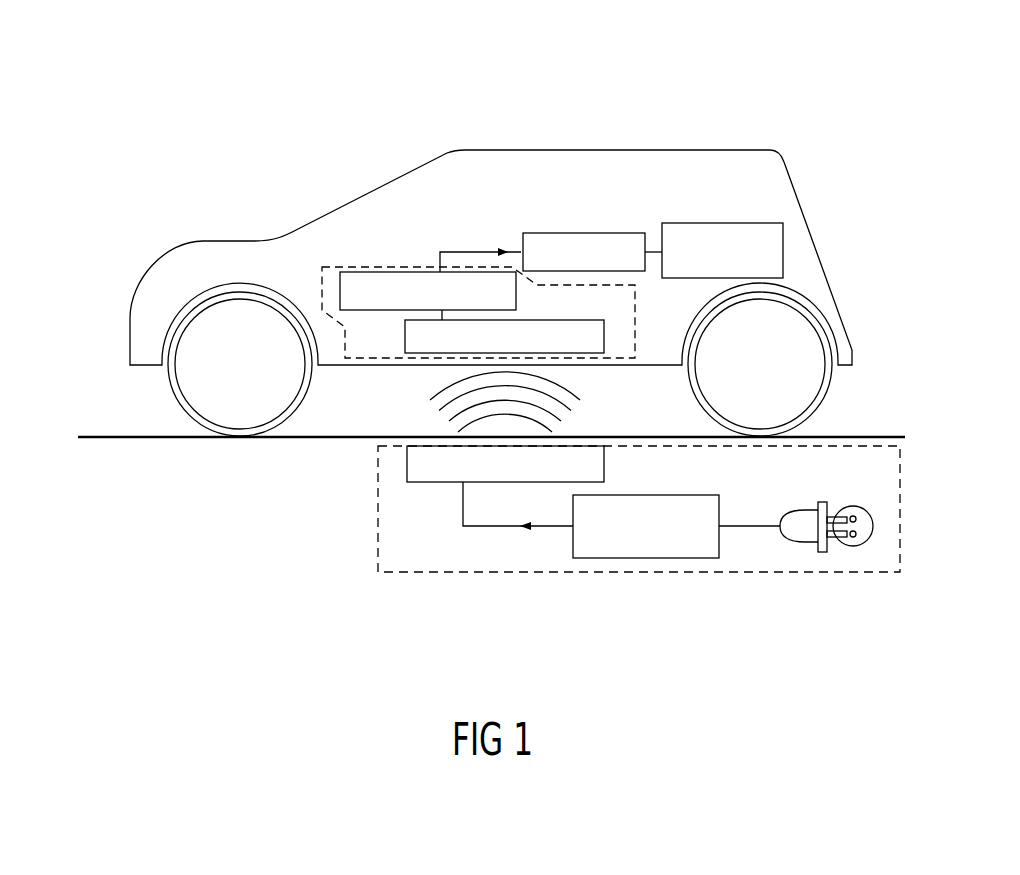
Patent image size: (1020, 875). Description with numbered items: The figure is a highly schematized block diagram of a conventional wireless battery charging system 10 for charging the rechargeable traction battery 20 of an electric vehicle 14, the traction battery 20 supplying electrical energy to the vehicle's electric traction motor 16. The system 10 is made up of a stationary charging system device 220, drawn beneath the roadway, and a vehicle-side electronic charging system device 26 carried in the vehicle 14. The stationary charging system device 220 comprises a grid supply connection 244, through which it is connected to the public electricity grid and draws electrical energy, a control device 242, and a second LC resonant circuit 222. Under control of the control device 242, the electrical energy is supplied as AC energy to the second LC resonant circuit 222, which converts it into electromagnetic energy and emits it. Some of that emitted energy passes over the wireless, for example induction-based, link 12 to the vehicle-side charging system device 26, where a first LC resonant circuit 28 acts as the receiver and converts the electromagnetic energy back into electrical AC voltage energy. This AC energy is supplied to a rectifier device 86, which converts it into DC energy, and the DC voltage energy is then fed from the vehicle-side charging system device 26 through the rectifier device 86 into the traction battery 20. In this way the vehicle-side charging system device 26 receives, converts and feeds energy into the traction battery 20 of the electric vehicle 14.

The wireless battery charging system 10 is at (343, 489).
The wireless link 12 is at (425, 420).
The electric vehicle 14 is at (744, 98).
The electric traction motor 16 is at (727, 223).
The traction battery 20 is at (585, 233).
The vehicle-side charging system device 26 is at (433, 265).
The first LC resonant circuit 28 is at (604, 335).
The rectifier device 86 is at (388, 272).
The stationary charging system device 220 is at (833, 573).
The second LC resonant circuit 222 is at (446, 483).
The control device 242 is at (719, 512).
The grid supply connection 244 is at (809, 549).